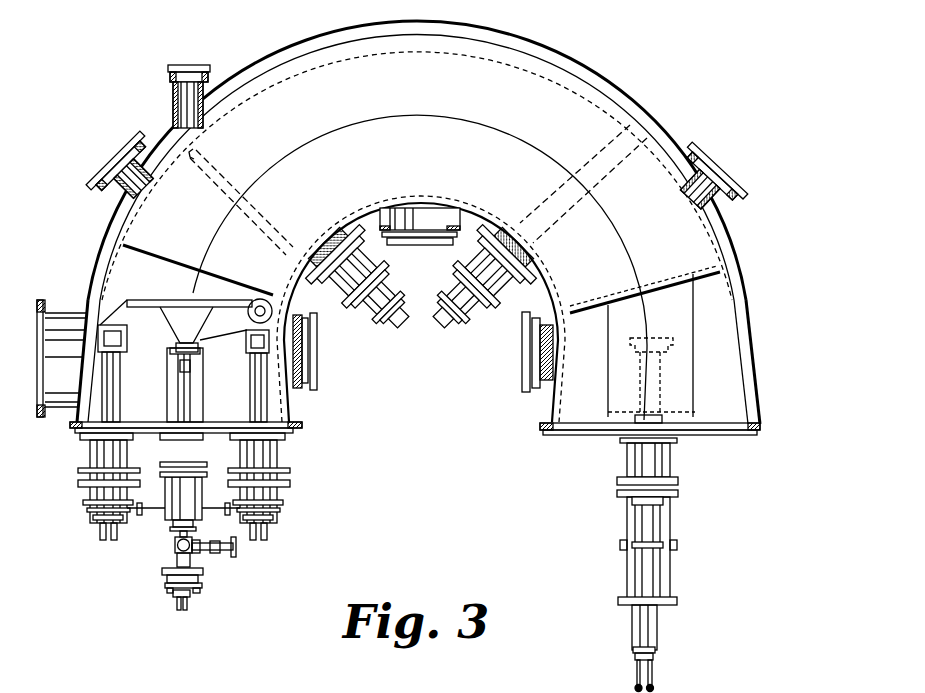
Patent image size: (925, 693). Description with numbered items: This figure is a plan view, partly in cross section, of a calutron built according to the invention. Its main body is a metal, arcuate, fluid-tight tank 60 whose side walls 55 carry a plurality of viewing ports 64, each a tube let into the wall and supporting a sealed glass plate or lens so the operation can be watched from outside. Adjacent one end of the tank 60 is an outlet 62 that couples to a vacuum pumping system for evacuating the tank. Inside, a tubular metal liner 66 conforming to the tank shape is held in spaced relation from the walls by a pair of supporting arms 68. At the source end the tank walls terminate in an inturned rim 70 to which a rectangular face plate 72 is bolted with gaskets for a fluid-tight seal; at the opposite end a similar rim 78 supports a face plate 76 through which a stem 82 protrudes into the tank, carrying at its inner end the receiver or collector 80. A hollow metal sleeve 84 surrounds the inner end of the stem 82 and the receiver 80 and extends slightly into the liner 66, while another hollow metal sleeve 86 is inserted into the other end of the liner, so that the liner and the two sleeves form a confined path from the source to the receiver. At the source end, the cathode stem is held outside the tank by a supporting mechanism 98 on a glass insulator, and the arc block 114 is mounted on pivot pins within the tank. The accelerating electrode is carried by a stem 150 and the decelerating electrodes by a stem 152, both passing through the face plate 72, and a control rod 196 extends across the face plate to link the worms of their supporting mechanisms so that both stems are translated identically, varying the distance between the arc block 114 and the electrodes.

The side walls 55 is at (738, 265).
The tank 60 is at (628, 82).
The outlet 62 is at (63, 313).
The viewing ports 64 is at (189, 64).
The tubular metal liner 66 is at (554, 66).
The supporting arms 68 is at (447, 333).
The inturned flange or rim 70 is at (300, 426).
The face plate 72 is at (293, 431).
The face plate 76 is at (720, 438).
The rim 78 is at (760, 418).
The receiver or collector 80 is at (672, 352).
The stem 82 is at (660, 392).
The hollow metal sleeve 84 is at (697, 313).
The hollow metal sleeve 86 is at (133, 262).
The supporting mechanism 98 is at (212, 580).
The arc block 114 is at (172, 345).
The stem 150 is at (252, 396).
The stem 152 is at (118, 410).
The control rod 196 is at (163, 510).